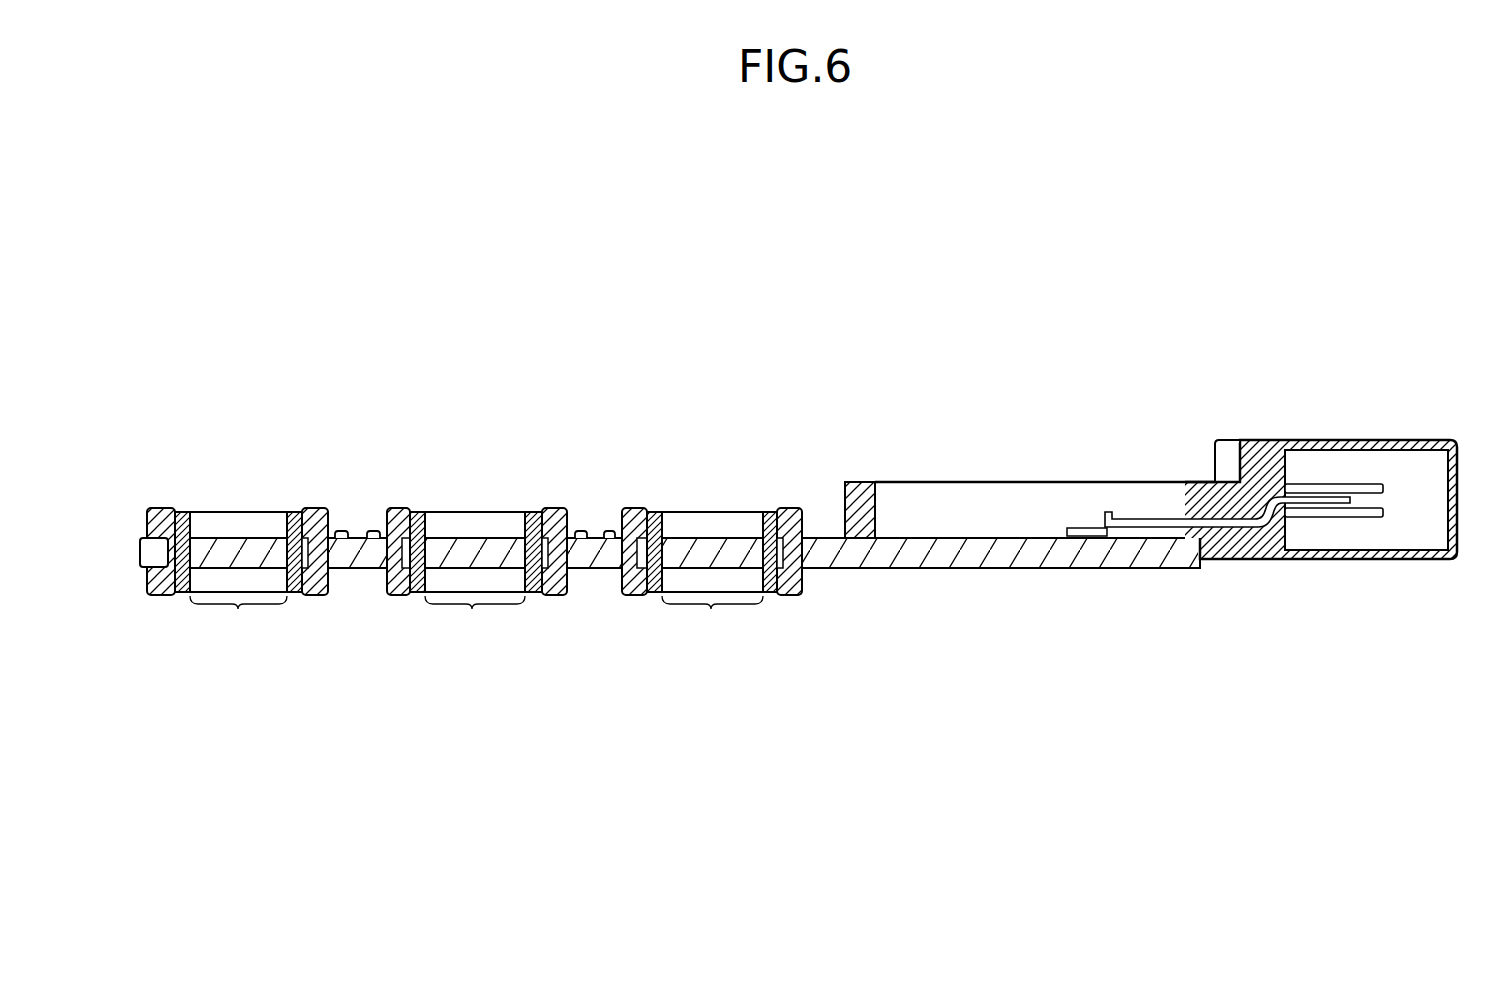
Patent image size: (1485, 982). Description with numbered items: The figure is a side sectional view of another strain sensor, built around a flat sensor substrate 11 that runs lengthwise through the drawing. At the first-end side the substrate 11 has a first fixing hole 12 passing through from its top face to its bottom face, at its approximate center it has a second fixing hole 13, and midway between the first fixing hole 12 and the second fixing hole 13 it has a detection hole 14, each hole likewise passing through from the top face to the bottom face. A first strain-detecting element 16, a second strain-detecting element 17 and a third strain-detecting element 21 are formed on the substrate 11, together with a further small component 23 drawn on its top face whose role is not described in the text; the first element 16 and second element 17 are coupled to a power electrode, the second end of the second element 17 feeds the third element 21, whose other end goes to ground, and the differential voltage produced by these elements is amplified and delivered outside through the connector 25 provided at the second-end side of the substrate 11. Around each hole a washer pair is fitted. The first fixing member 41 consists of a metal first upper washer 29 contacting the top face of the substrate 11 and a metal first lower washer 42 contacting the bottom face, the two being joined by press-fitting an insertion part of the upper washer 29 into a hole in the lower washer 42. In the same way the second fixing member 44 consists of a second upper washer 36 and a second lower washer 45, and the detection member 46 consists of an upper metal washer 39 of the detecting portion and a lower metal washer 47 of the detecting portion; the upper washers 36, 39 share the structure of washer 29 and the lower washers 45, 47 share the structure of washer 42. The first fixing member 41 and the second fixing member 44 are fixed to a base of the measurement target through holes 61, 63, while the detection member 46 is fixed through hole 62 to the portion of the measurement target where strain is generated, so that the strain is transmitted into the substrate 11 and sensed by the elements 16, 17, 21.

The sensor substrate 11 is at (830, 558).
The first fixing hole 12 is at (180, 592).
The second fixing hole 13 is at (633, 593).
The detection hole 14 is at (307, 593).
The first strain-detecting element 16 is at (606, 550).
The second strain-detecting element 17 is at (374, 531).
The third strain-detecting element 21 is at (341, 531).
The projection 23 is at (581, 531).
The connector 25 is at (1243, 553).
The first upper washer 29 is at (160, 508).
The second upper washer 36 is at (778, 508).
The upper metal washer of detecting portion 39 is at (395, 508).
The first fixing member 41 is at (307, 508).
The first lower washer 42 is at (165, 593).
The second fixing member 44 is at (633, 508).
The second lower washer 45 is at (777, 593).
The detection member 46 is at (552, 508).
The lower metal washer of detecting portion 47 is at (548, 593).
The hole 61 is at (238, 577).
The hole 62 is at (475, 577).
The hole 63 is at (712, 579).